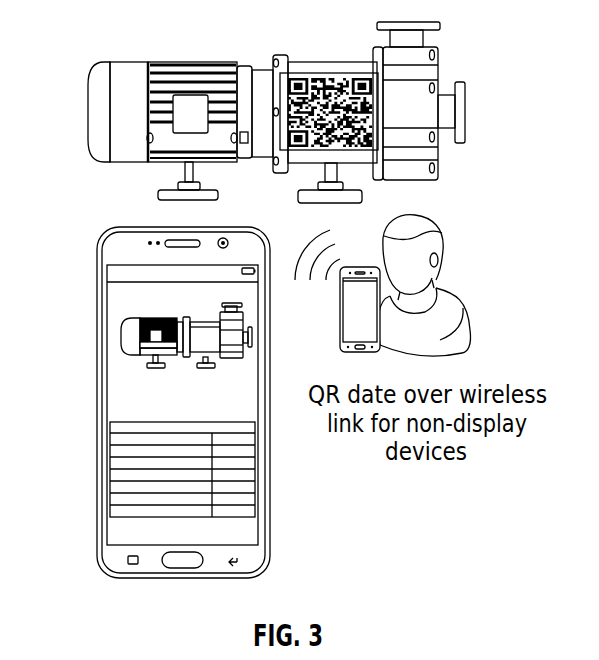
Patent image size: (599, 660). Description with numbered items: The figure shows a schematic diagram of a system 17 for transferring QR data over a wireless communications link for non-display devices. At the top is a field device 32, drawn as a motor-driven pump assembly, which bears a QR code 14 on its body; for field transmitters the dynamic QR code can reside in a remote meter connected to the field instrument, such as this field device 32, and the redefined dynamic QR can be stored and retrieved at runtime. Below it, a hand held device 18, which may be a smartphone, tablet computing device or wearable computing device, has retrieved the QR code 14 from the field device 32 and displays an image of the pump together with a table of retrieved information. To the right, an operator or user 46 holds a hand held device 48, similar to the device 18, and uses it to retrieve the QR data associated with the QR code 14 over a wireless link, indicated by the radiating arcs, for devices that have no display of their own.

The QR code 14 is at (332, 75).
The system 17 is at (417, 285).
The hand held device 18 is at (93, 580).
The field device 32 is at (95, 113).
The user 46 is at (462, 342).
The hand held device 48 is at (352, 327).